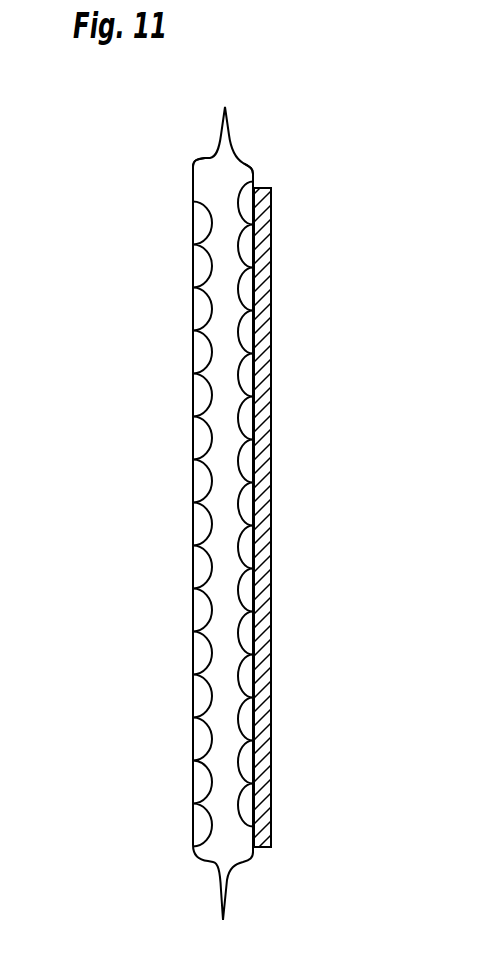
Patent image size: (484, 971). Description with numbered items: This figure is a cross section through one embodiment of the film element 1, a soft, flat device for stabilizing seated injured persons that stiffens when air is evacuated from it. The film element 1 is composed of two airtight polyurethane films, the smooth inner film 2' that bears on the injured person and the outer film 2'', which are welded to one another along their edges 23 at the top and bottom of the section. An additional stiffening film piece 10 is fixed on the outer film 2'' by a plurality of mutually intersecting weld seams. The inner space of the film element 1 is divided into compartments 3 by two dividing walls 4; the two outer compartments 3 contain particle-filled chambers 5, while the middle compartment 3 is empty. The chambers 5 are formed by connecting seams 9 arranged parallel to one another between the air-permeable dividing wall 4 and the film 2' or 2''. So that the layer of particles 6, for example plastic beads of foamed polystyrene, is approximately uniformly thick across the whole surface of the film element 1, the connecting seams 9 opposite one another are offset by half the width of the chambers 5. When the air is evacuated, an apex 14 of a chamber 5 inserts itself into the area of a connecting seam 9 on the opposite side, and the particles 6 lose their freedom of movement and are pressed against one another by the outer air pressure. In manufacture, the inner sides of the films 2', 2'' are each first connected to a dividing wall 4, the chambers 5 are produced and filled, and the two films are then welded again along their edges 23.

The film element 1 is at (305, 666).
The inner film 2' is at (163, 135).
The outer film 2'' is at (297, 153).
The edges 23 is at (225, 107).
The compartments 3 is at (187, 571).
The dividing wall 4 is at (248, 785).
The chambers 5 is at (181, 438).
The particles 6 is at (234, 504).
The connecting seams 9 is at (193, 286).
The stiffening film piece 10 is at (272, 360).
The apex 14 is at (250, 783).